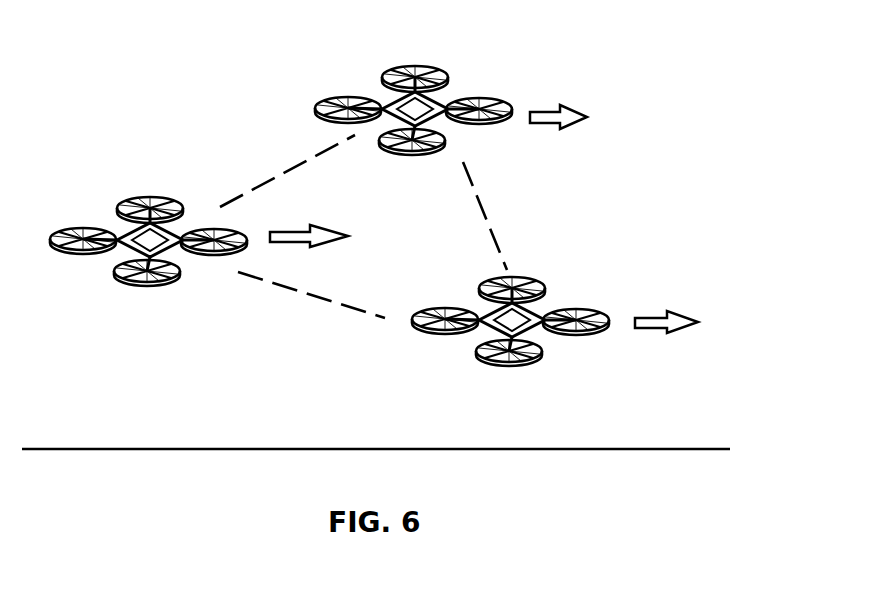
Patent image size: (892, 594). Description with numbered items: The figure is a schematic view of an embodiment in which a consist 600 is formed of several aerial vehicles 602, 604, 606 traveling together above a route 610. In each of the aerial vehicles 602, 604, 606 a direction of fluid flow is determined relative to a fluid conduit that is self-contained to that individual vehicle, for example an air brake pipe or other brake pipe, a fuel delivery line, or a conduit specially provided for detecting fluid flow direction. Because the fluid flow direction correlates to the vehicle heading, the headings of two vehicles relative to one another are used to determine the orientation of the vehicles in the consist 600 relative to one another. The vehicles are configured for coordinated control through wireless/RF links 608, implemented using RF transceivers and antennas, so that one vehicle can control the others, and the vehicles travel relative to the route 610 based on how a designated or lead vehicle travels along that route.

The consist 600 is at (150, 83).
The aerial vehicle 602 is at (428, 70).
The aerial vehicle 604 is at (155, 196).
The aerial vehicle 606 is at (546, 283).
The wireless/RF links 608 is at (352, 303).
The route 610 is at (635, 447).